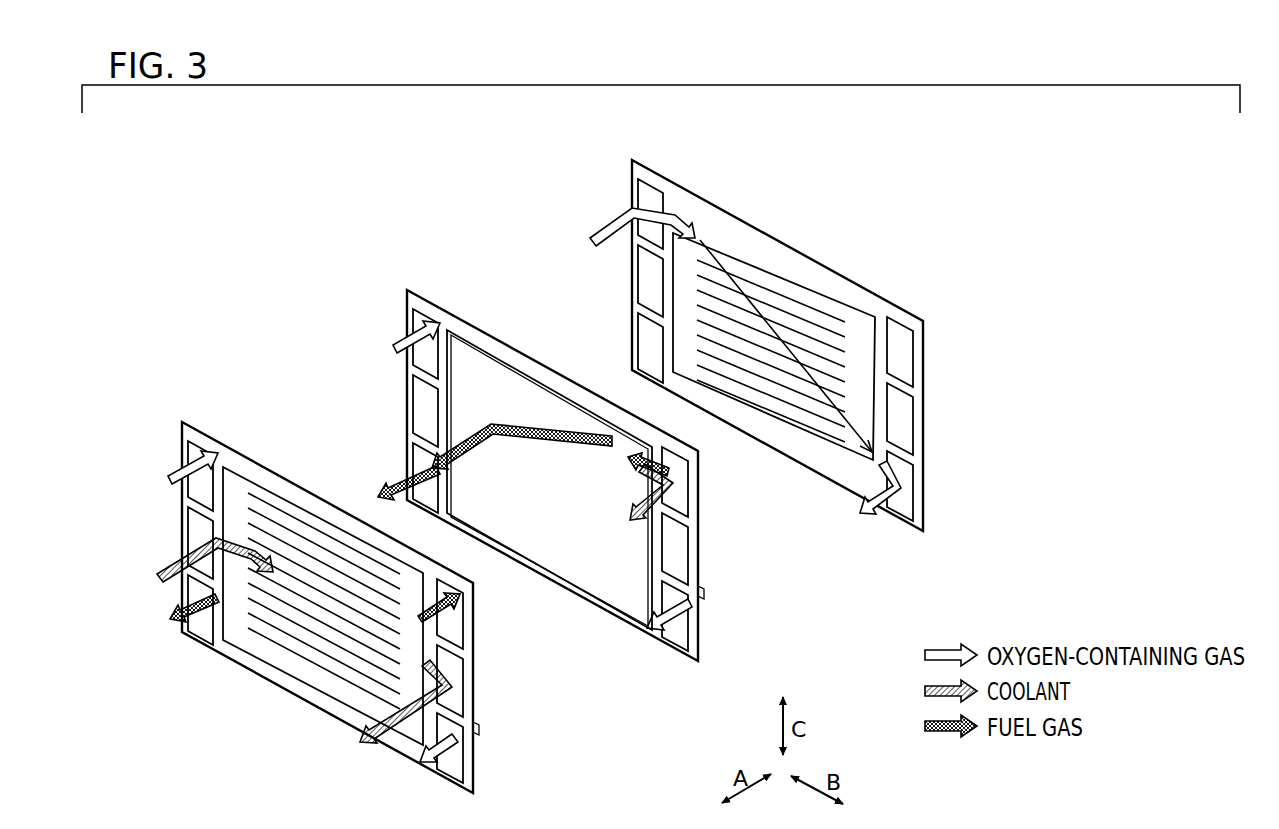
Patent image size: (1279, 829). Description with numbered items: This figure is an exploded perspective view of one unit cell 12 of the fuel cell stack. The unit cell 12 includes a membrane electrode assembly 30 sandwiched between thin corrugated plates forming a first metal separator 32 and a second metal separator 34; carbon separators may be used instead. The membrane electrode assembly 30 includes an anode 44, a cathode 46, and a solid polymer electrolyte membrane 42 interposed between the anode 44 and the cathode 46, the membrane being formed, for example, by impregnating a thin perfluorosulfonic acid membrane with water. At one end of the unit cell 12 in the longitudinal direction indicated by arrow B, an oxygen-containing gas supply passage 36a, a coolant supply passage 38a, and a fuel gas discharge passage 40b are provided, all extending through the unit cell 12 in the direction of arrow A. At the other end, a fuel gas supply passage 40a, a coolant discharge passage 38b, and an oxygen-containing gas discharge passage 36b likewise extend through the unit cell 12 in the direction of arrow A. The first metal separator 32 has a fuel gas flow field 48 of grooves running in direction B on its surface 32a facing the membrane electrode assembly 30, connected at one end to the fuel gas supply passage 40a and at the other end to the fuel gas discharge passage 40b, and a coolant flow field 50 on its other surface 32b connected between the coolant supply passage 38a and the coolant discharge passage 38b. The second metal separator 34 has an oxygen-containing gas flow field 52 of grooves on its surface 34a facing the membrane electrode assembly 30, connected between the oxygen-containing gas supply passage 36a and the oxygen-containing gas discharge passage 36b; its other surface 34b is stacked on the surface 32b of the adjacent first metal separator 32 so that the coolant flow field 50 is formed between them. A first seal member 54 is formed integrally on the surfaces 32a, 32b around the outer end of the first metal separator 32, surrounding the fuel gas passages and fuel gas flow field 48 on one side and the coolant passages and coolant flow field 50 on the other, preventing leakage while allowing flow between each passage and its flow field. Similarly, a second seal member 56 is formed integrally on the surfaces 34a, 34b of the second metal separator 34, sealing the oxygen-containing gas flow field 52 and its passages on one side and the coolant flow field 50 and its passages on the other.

The unit cell 12 is at (206, 301).
The membrane electrode assembly 30 is at (406, 287).
The first metal separator 32 is at (181, 419).
The second metal separator 34 is at (631, 157).
The oxygen-containing gas supply passage 36a is at (198, 447).
The oxygen-containing gas discharge passage 36b is at (450, 752).
The coolant supply passage 38a is at (198, 546).
The coolant discharge passage 38b is at (443, 685).
The fuel gas supply passage 40a is at (458, 620).
The fuel gas discharge passage 40b is at (198, 598).
The solid polymer electrolyte membrane 42 is at (658, 643).
The anode 44 is at (617, 600).
The cathode 46 is at (508, 388).
The fuel gas flow field 48 is at (267, 500).
The coolant flow field 50 is at (267, 643).
The first seal member 54 is at (315, 700).
The surface of first metal separator 32a is at (390, 738).
The other surface of first metal separator 32b is at (347, 712).
The oxygen-containing gas flow field 52 is at (812, 290).
The second seal member 56 is at (867, 295).
The surface of second metal separator 34a is at (840, 482).
The other surface of second metal separator 34b is at (775, 435).